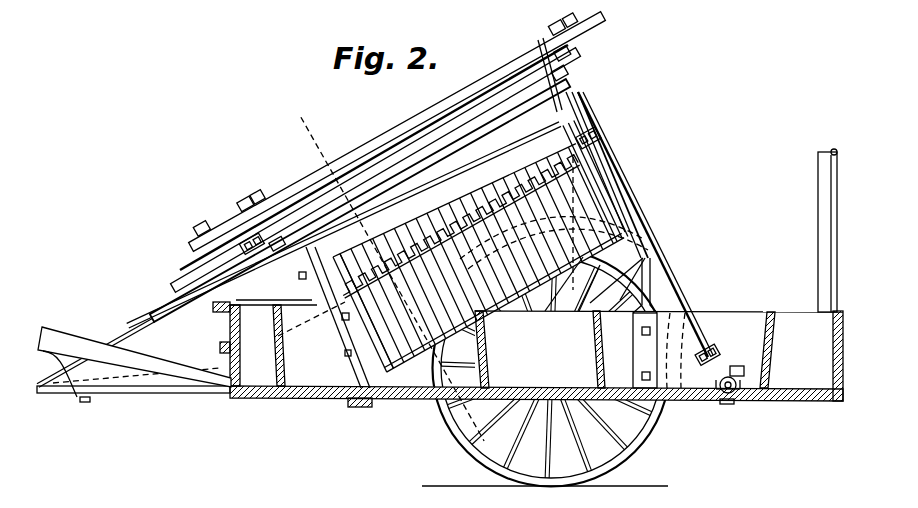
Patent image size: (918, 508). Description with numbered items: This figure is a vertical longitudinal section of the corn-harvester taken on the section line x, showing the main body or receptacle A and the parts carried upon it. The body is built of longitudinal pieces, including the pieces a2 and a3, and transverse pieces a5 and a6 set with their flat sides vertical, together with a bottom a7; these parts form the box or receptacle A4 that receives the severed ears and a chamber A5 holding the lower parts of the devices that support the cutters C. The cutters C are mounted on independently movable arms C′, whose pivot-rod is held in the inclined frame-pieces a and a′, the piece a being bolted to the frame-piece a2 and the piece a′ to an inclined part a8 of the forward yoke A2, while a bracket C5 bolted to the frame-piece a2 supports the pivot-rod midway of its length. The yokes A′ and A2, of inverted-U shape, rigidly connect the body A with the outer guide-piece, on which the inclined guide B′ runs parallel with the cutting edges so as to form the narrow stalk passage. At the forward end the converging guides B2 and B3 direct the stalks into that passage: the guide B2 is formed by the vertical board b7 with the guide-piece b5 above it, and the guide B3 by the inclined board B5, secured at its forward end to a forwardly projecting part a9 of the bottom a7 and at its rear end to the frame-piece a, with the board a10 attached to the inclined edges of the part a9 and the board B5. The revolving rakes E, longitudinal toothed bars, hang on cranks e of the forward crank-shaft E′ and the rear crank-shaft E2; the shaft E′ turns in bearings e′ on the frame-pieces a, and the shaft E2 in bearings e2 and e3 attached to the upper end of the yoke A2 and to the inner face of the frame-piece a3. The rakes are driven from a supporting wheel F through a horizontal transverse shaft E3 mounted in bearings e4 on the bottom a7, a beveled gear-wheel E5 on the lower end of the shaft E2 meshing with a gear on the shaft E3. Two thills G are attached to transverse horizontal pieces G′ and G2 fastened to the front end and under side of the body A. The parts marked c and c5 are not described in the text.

The supporting wheel F is at (654, 429).
The cutter C is at (473, 258).
The slat c is at (477, 182).
The independently-movable arm C′ is at (459, 248).
The bracket C5 is at (504, 302).
The wheel clearance arc c5 is at (554, 243).
The section line x x is at (436, 274).
The inclined guide B′ is at (344, 225).
The guide-piece b5 is at (197, 297).
The converging guide B2 is at (148, 323).
The converging guide B3 is at (158, 384).
The inclined board B5 is at (376, 177).
The revolving rake E is at (420, 167).
The vertical board b7 is at (153, 330).
The bearing e′ is at (340, 382).
The crank e is at (557, 33).
The inclined frame-piece a is at (338, 317).
The forward crank-shaft E′ is at (278, 326).
The longitudinal frame-piece a3 is at (753, 318).
The inclined frame-piece a′ is at (595, 180).
The inclined part of forward yoke a8 is at (622, 212).
The rear crank-shaft E2 is at (658, 252).
The bearing e2 is at (600, 133).
The bearing e3 is at (712, 350).
The beveled gear-wheel E5 is at (742, 367).
The horizontal shaft E3 is at (725, 400).
The bearing e4 is at (727, 404).
The forward yoke A2 is at (601, 322).
The chamber A5 is at (428, 385).
The box or receptacle A4 is at (571, 349).
The longitudinal frame-piece a2 is at (531, 346).
The main body A is at (778, 350).
The transverse piece a6 is at (840, 350).
The yoke A′ is at (832, 268).
The bottom a7 is at (536, 387).
The forwardly-projecting part of bottom a9 is at (196, 392).
The board a10 is at (174, 392).
The transverse piece a5 is at (279, 344).
The thill G is at (134, 364).
The transverse horizontal piece G′ is at (223, 347).
The transverse horizontal piece G2 is at (357, 408).